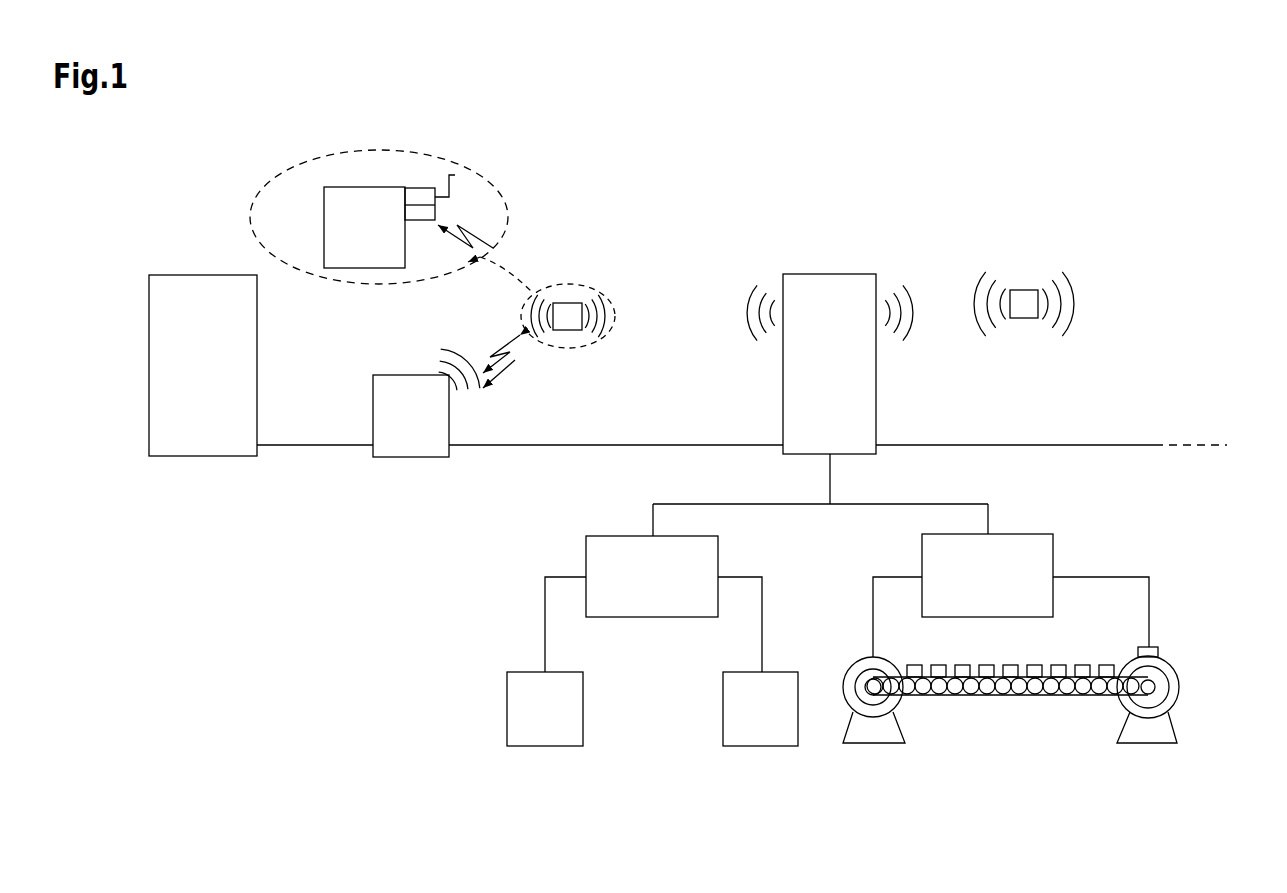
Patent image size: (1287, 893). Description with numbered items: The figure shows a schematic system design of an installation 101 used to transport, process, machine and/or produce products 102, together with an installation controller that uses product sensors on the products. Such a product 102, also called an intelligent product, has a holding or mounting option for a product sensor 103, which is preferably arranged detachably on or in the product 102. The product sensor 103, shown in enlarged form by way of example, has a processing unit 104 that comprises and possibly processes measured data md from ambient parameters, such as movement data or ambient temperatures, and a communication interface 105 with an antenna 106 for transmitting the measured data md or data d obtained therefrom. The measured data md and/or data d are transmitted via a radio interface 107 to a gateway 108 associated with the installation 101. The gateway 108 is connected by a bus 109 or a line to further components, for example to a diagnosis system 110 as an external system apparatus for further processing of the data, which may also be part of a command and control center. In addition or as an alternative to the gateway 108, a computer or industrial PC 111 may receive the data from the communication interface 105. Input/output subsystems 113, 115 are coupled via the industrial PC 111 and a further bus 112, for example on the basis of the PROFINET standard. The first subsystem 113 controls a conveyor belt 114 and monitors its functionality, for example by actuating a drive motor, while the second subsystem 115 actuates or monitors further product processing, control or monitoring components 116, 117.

The installation 101 is at (1148, 212).
The product 102 is at (308, 170).
The product sensor 103 is at (407, 178).
The processing unit 104 is at (423, 222).
The communication interface 105 is at (422, 187).
The antenna 106 is at (452, 183).
The radio interface 107 is at (492, 348).
The gateway 108 is at (400, 375).
The bus 109 is at (308, 447).
The diagnosis system 110 is at (149, 275).
The industrial PC 111 is at (787, 274).
The further bus 112 is at (655, 505).
The first subsystem 113 is at (1053, 534).
The conveyor belt 114 is at (1160, 653).
The second subsystem 115 is at (667, 618).
The product processing, control or monitoring component 116 is at (768, 670).
The product processing, control or monitoring component 117 is at (507, 708).
The measured data md is at (473, 228).
The data d is at (503, 378).